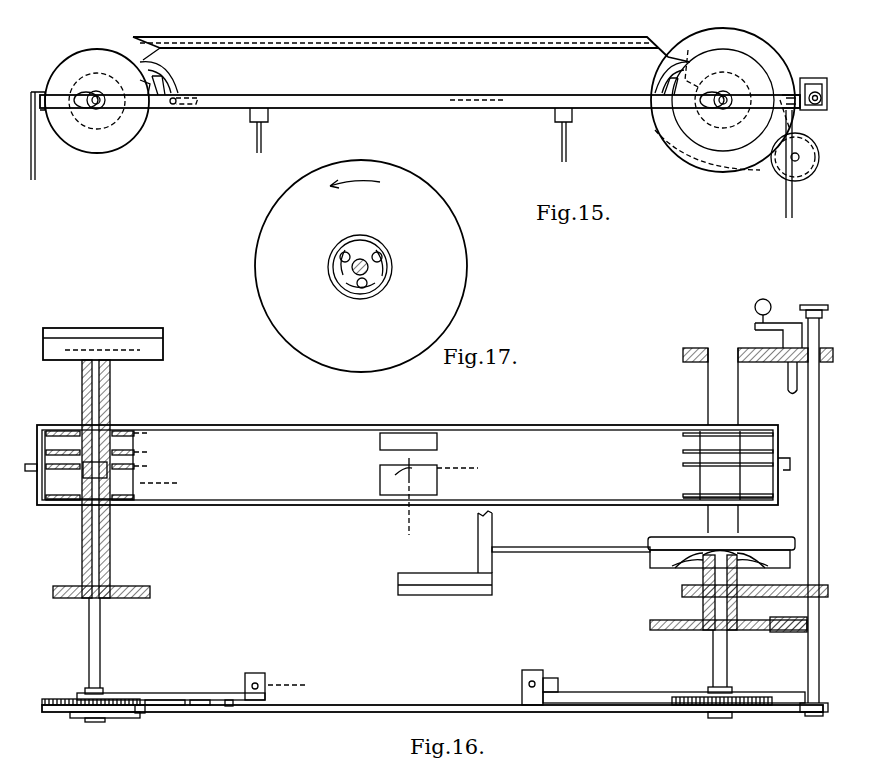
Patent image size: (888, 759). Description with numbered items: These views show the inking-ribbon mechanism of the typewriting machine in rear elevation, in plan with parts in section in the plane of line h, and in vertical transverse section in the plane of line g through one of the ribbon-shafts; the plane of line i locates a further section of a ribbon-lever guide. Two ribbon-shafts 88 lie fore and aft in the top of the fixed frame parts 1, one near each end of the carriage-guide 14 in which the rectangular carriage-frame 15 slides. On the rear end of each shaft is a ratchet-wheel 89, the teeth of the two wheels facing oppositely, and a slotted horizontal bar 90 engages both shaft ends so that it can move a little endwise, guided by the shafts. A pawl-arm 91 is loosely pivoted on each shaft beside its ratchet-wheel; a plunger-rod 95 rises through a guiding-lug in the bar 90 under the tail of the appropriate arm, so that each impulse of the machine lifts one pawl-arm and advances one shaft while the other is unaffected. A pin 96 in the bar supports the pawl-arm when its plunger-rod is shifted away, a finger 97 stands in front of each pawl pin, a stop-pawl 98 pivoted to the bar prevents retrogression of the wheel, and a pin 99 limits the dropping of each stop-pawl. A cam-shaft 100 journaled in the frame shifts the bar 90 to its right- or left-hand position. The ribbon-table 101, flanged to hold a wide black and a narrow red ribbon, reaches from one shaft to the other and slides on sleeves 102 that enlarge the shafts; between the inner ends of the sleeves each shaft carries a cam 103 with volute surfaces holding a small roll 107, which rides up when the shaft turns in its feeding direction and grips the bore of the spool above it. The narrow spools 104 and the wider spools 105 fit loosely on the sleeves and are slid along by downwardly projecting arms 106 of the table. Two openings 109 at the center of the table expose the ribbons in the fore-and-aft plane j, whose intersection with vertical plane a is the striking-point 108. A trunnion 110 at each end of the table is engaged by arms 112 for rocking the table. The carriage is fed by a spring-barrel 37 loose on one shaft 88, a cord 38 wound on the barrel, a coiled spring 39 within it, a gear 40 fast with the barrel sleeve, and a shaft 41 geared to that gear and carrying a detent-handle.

In FIG. 16, the fixed frame parts 1 is at (128, 596).
In FIG. 16, the carriage-guide 14 is at (77, 337).
In FIG. 16, the carriage-frame 15 is at (442, 592).
In FIG. 16, the spring-barrel 37 is at (650, 562).
In FIG. 16, the cord 38 is at (700, 552).
In FIG. 16, the spring 39 is at (748, 552).
In FIG. 15, the gear 40 is at (690, 156).
In FIG. 16, the gear 40 is at (676, 629).
In FIG. 15, the shaft 41 is at (803, 172).
In FIG. 16, the shaft 41 is at (788, 380).
In FIG. 15, the ribbon-shafts 88 is at (93, 92).
In FIG. 17, the ribbon-shafts 88 is at (352, 272).
In FIG. 16, the ribbon-shafts 88 is at (90, 646).
In FIG. 15, the ratchet-wheel 89 is at (130, 126).
In FIG. 16, the ratchet-wheel 89 is at (58, 698).
In FIG. 15, the horizontal bar 90 is at (311, 96).
In FIG. 16, the horizontal bar 90 is at (390, 704).
In FIG. 16, the pawl-arm 91 is at (170, 692).
In FIG. 15, the plunger-rod 95 is at (256, 148).
In FIG. 16, the pin 96 is at (230, 706).
In FIG. 15, the finger 97 is at (140, 82).
In FIG. 16, the finger 97 is at (141, 713).
In FIG. 15, the stop-pawl 98 is at (176, 88).
In FIG. 15, the pin 99 is at (196, 96).
In FIG. 15, the cam-shaft 100 is at (812, 82).
In FIG. 16, the cam-shaft 100 is at (810, 646).
In FIG. 15, the ribbon-table 101 is at (395, 45).
In FIG. 16, the ribbon-table 101 is at (283, 455).
In FIG. 16, the sleeves 102 is at (112, 536).
In FIG. 17, the cam 103 is at (376, 278).
In FIG. 16, the cam 103 is at (90, 472).
In FIG. 16, the narrow spools 104 is at (58, 440).
In FIG. 17, the wide spools 105 is at (266, 284).
In FIG. 16, the wide spools 105 is at (70, 502).
In FIG. 15, the arms 106 is at (143, 58).
In FIG. 16, the arms 106 is at (125, 428).
In FIG. 17, the roll 107 is at (364, 290).
In FIG. 16, the striking-point 108 is at (388, 472).
In FIG. 16, the openings 109 is at (380, 445).
In FIG. 16, the trunnion 110 is at (787, 456).
In FIG. 15, the arms 112 is at (36, 166).
In FIG. 16, the plane a is at (464, 466).
In FIG. 16, the line g is at (166, 484).
In FIG. 15, the line h is at (482, 83).
In FIG. 16, the line i is at (394, 687).
In FIG. 16, the plane j is at (403, 519).